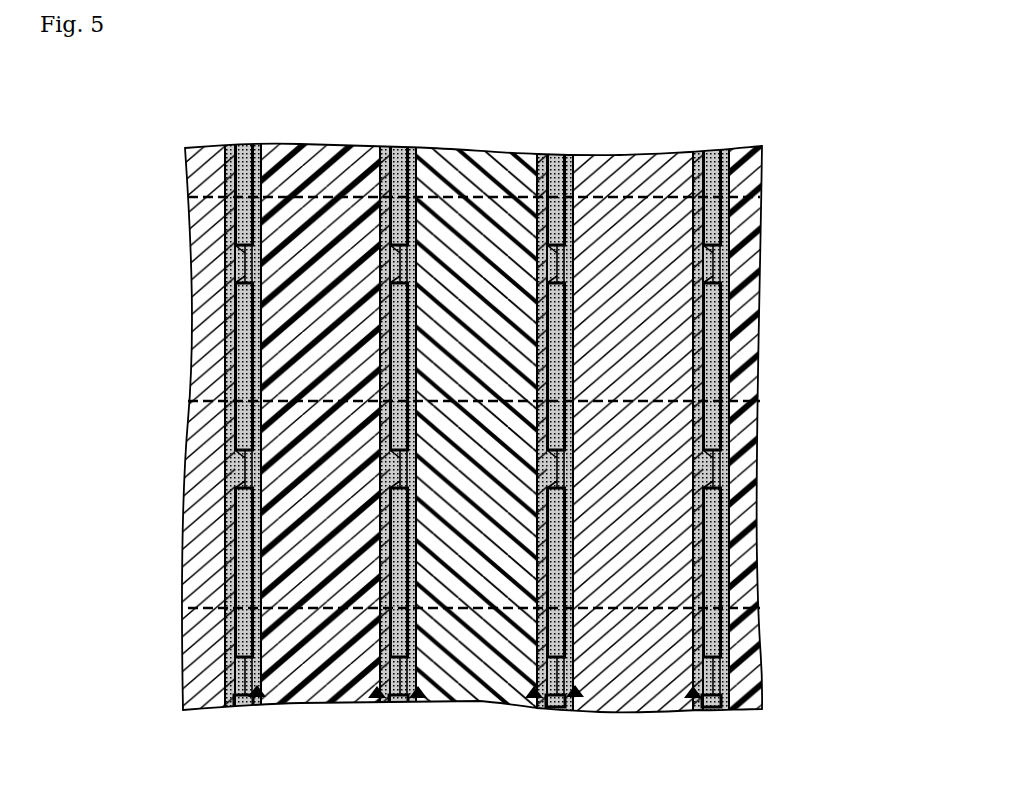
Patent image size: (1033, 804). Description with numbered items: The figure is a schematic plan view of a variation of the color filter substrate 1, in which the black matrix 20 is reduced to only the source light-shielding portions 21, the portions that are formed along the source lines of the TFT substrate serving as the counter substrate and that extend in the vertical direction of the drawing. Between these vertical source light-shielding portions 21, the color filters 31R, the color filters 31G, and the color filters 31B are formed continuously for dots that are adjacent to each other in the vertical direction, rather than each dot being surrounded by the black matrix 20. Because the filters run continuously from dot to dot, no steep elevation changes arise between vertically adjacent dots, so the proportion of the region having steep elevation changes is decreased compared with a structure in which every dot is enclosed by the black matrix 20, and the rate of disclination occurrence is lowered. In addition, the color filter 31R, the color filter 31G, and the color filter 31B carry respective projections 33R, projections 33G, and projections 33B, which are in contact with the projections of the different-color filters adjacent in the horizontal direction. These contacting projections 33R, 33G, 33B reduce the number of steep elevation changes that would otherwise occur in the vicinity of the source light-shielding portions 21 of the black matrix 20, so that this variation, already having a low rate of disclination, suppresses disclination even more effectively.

The display device 1 is at (718, 128).
The black matrix 20 is at (474, 402).
The source light-shielding portions 21 is at (712, 194).
The color filters 31R is at (316, 178).
The color filters 31G is at (466, 180).
The color filters 31B is at (614, 176).
The projections 33R is at (257, 693).
The projections 33G is at (418, 693).
The projections 33B is at (575, 693).